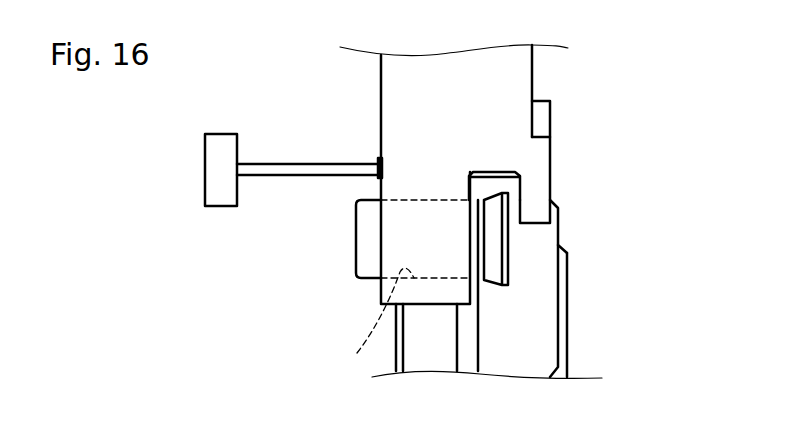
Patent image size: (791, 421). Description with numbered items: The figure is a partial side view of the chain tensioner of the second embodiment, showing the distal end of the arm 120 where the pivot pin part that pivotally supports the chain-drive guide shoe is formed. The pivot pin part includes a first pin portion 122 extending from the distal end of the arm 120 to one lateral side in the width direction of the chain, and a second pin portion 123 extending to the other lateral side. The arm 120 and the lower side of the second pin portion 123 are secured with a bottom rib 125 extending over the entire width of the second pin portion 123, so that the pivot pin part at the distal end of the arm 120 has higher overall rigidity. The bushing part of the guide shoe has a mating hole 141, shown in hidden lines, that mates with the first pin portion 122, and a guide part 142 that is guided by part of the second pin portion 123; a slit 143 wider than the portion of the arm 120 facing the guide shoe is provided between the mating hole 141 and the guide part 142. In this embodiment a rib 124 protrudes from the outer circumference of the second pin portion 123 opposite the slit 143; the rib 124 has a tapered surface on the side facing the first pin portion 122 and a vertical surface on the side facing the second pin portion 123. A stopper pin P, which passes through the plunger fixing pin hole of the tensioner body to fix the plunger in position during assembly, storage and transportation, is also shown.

The stopper pin P is at (302, 170).
The arm 120 is at (510, 353).
The first pin portion 122 is at (371, 247).
The second pin portion 123 is at (547, 230).
The rib 124 is at (503, 238).
The bottom rib 125 is at (543, 298).
The mating hole 141 is at (358, 352).
The guide part 142 is at (533, 207).
The slit 143 is at (499, 169).